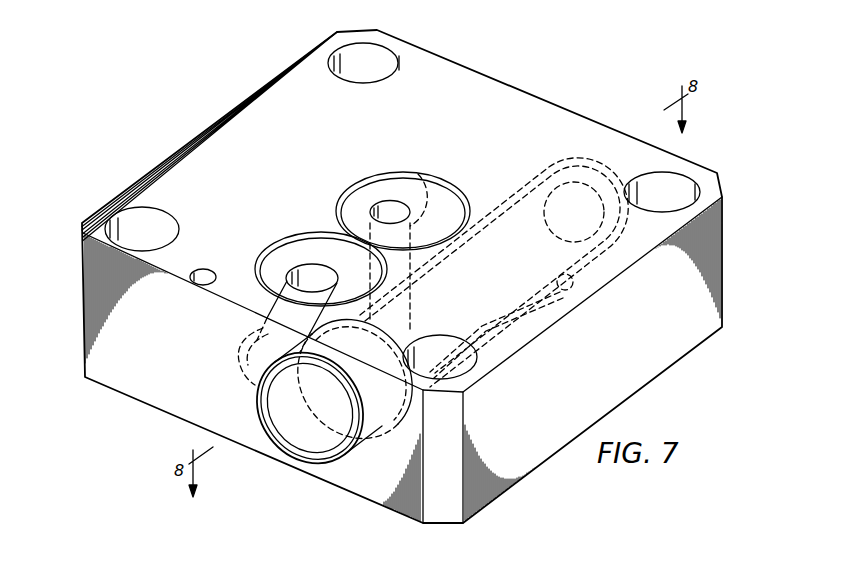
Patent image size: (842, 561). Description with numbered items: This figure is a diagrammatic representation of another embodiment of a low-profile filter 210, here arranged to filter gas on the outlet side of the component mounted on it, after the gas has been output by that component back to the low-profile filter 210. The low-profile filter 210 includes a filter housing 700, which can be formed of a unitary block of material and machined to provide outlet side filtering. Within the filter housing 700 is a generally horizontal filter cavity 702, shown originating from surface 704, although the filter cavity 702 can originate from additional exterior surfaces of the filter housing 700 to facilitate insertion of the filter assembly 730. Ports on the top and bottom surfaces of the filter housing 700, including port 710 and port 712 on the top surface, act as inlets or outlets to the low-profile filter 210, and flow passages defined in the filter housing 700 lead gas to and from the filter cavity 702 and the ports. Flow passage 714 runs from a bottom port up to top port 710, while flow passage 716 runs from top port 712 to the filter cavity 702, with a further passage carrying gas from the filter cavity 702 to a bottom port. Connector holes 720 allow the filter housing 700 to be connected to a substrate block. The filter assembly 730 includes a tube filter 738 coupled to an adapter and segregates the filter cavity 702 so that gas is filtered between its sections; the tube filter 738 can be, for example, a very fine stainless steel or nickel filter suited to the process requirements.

The low-profile filter 210 is at (243, 73).
The filter housing 700 is at (204, 148).
The filter cavity 702 is at (580, 284).
The surface 704 is at (152, 390).
The port 710 is at (385, 173).
The port 712 is at (303, 233).
The flow passage 714 is at (420, 173).
The flow passage 716 is at (248, 330).
The connector holes 720 is at (378, 74).
The filter assembly 730 is at (487, 335).
The tube filter 738 is at (547, 322).